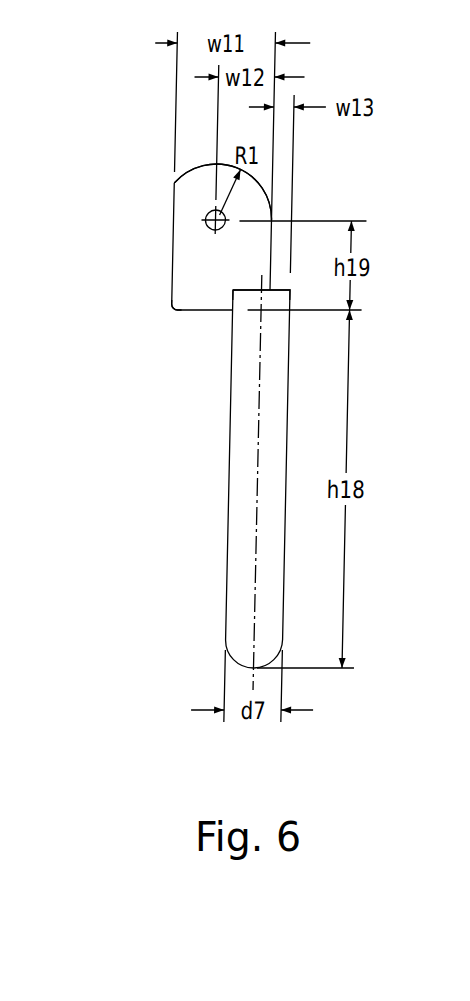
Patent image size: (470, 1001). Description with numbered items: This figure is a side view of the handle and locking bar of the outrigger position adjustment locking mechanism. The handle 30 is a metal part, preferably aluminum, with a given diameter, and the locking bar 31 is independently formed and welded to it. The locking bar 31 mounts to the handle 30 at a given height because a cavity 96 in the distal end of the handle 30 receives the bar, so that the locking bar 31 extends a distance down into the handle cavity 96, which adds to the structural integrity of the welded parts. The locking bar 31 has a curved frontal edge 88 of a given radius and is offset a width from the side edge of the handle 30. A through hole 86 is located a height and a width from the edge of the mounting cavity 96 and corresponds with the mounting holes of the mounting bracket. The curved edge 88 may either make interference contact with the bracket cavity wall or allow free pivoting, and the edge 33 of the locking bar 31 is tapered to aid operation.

The handle 30 is at (223, 322).
The locking bar 31 is at (186, 254).
The edge of the locking bar 33 is at (174, 308).
The through hole 86 is at (207, 213).
The curved frontal edge 88 is at (184, 171).
The cavity 96 is at (250, 300).